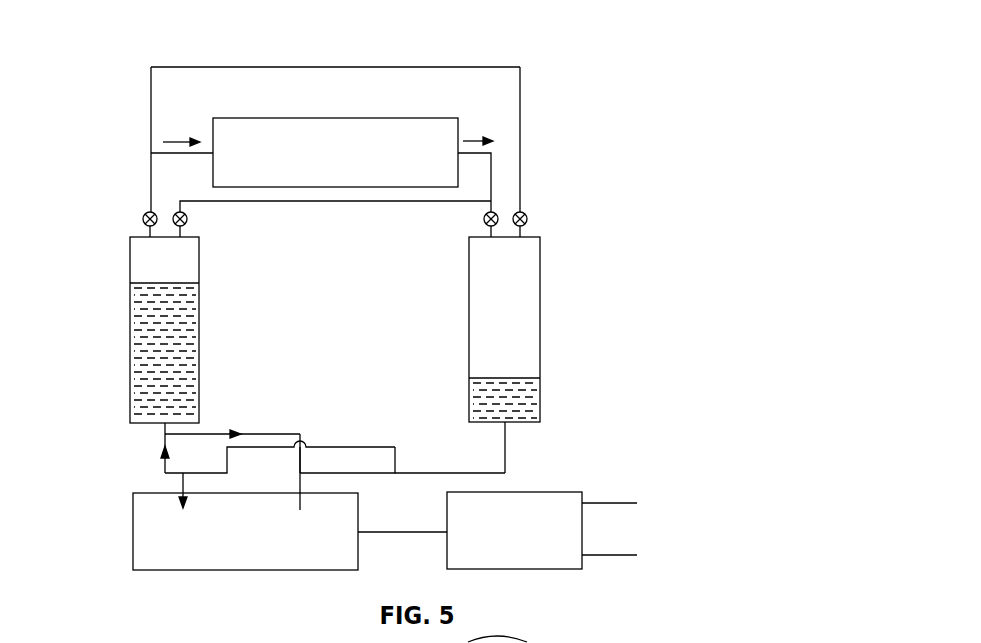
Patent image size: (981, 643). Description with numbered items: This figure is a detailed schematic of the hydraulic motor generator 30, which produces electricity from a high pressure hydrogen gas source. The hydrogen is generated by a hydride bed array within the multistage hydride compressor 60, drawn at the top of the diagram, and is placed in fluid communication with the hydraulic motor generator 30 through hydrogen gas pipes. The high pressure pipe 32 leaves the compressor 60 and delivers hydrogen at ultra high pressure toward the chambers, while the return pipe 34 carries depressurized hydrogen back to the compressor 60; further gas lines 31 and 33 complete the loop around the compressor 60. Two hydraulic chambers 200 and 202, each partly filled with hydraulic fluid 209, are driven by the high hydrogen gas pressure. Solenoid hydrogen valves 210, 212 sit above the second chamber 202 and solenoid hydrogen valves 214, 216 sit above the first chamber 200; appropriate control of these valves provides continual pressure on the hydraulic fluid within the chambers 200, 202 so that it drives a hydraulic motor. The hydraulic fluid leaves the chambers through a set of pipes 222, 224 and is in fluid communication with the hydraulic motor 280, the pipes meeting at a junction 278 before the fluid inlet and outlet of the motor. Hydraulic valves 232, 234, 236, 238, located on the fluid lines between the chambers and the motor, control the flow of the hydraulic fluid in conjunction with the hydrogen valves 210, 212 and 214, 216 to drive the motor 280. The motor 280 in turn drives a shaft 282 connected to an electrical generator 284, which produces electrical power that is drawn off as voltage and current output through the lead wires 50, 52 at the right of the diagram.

The hydraulic motor generator 30 is at (553, 310).
The gas conduit 31 is at (521, 87).
The high pressure pipe 32 is at (492, 180).
The gas conduit 33 is at (191, 67).
The return pipe 34 is at (203, 153).
The lead wire 50 is at (607, 555).
The lead wire 52 is at (615, 503).
The multistage hydride compressor 60 is at (227, 133).
The hydraulic chamber 200 is at (130, 265).
The hydraulic chamber 202 is at (469, 300).
The liquid 209 is at (141, 343).
The solenoid hydrogen valve 210 is at (483, 222).
The solenoid hydrogen valve 212 is at (528, 218).
The solenoid hydrogen valve 214 is at (143, 217).
The solenoid hydrogen valve 216 is at (188, 222).
The pipe 222 is at (507, 451).
The pipe 224 is at (165, 428).
The hydraulic valve 232 is at (161, 456).
The hydraulic valve 234 is at (236, 431).
The hydraulic valve 236 is at (345, 444).
The hydraulic valve 238 is at (355, 469).
The conduit junction 278 is at (300, 473).
The hydraulic motor 280 is at (197, 570).
The shaft 282 is at (405, 533).
The electrical generator 284 is at (520, 569).